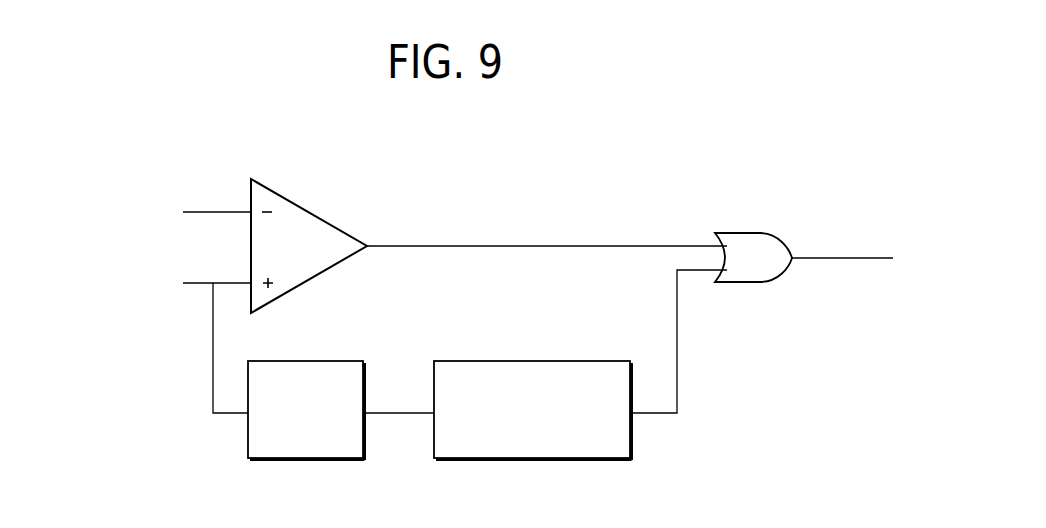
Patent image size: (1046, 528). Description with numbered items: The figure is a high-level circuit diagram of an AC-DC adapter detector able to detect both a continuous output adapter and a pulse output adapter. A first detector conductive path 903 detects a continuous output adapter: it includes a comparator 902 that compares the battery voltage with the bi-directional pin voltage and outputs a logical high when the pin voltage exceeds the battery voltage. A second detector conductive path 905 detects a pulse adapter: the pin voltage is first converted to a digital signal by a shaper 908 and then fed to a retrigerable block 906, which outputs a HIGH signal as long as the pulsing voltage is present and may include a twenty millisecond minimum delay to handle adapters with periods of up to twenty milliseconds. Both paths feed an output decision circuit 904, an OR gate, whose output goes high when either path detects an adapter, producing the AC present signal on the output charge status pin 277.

The comparator 902 is at (283, 192).
The first detector conductive path 903 is at (497, 231).
The output decision circuit 904 is at (729, 232).
The second detector conductive path 905 is at (194, 413).
The retrigerable block 906 is at (563, 361).
The shaper 908 is at (311, 361).
The output charge status pin 277 is at (795, 248).